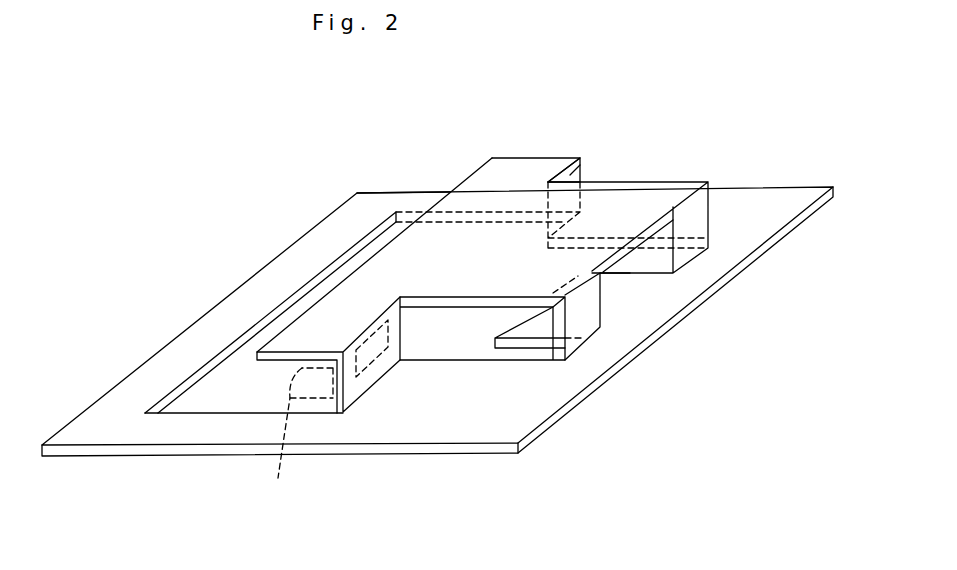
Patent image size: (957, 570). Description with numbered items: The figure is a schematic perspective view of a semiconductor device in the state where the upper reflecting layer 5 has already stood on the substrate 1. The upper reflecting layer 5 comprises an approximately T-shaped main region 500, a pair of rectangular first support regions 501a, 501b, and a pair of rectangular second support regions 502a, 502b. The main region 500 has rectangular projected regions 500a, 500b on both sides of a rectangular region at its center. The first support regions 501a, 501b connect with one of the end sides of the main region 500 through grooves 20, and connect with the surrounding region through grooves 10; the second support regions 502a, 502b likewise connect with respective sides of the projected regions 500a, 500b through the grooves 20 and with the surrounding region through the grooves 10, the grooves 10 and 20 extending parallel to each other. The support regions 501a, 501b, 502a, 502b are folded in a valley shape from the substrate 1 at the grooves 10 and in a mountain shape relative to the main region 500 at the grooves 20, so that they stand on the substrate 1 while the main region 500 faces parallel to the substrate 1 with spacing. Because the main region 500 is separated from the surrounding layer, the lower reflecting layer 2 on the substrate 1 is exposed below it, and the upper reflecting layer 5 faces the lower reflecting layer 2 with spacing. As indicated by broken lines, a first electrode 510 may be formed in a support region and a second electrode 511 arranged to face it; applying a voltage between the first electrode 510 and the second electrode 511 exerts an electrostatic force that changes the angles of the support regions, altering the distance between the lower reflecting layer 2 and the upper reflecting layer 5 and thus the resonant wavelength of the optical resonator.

The substrate 1 is at (230, 457).
The lower reflecting layer 2 is at (220, 388).
The upper reflecting layer 5 is at (337, 215).
The grooves 10 is at (695, 257).
The grooves 20 is at (558, 178).
The main region 500 is at (351, 225).
The projected region 500a is at (517, 177).
The projected region 500b is at (312, 335).
The first support region 501a is at (700, 225).
The first support region 501b is at (585, 313).
The second support region 502a is at (585, 162).
The second support region 502b is at (352, 397).
The first electrode 510 is at (402, 328).
The second electrode 511 is at (282, 442).